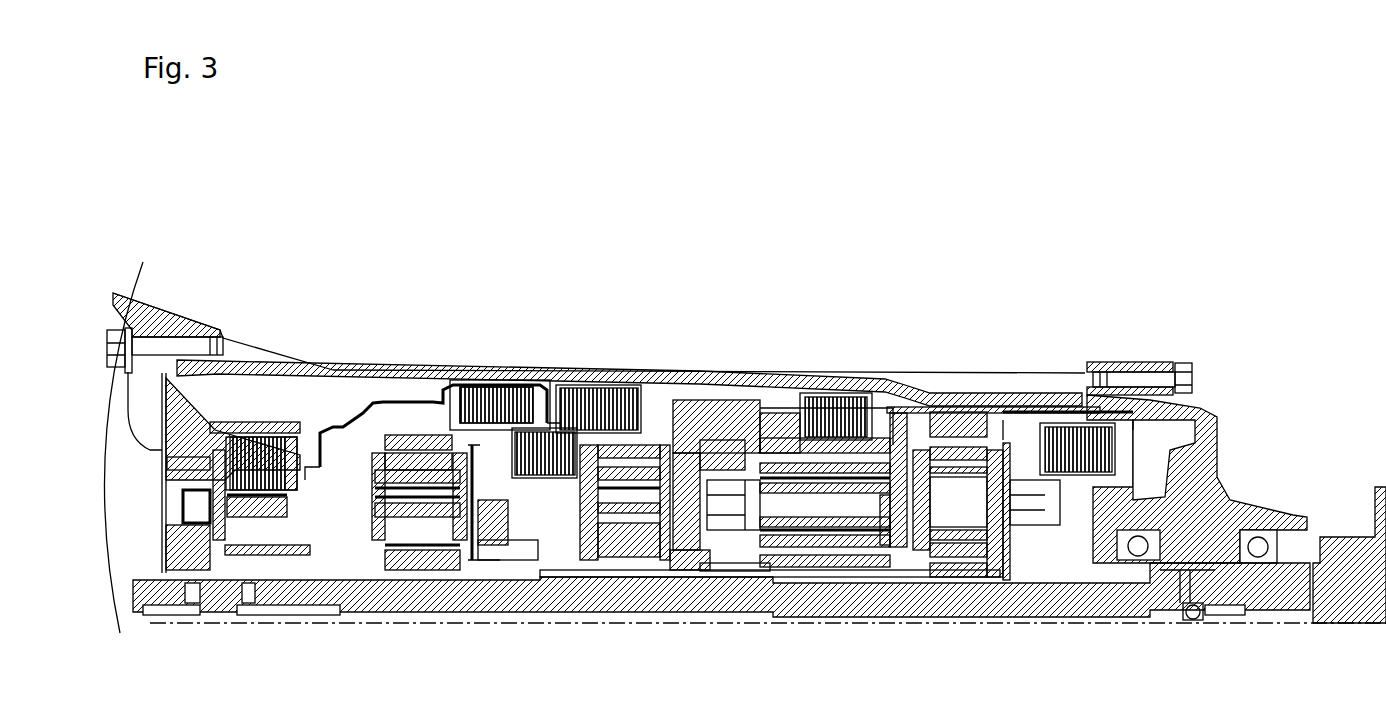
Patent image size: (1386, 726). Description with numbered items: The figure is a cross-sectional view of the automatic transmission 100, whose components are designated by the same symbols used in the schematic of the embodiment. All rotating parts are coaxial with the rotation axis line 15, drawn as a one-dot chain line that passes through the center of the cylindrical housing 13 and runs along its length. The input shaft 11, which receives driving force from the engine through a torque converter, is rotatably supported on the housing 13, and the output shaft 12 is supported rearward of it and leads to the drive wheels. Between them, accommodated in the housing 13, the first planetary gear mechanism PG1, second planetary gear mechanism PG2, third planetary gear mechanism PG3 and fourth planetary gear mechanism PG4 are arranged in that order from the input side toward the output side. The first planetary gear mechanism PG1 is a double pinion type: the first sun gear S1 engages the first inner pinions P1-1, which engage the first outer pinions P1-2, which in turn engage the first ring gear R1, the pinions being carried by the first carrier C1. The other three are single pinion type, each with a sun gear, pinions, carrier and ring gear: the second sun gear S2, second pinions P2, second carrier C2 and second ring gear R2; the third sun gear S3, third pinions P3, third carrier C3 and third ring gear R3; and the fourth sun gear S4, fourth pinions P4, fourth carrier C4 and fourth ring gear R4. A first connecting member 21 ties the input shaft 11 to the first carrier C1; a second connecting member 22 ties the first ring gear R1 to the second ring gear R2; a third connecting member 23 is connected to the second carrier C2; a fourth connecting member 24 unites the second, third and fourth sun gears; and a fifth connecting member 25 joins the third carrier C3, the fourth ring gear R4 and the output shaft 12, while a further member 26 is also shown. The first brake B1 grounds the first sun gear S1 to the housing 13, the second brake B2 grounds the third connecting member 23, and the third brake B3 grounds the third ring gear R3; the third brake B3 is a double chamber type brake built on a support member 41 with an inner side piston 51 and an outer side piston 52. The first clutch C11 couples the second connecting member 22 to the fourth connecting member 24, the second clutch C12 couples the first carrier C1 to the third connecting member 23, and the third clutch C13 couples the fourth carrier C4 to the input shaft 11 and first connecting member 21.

The automatic transmission 100 is at (670, 290).
The input shaft 11 is at (811, 605).
The output shaft 12 is at (1340, 623).
The housing 13 is at (448, 380).
The rotation axis line 15 is at (688, 625).
The first connecting member 21 is at (500, 560).
The second connecting member 22 is at (447, 402).
The third connecting member 23 is at (675, 400).
The fourth connecting member 24 is at (745, 585).
The fifth connecting member 25 is at (1022, 412).
The hub 26 is at (998, 407).
The support member 41 is at (692, 440).
The inner side piston 51 is at (718, 460).
The outer side piston 52 is at (775, 415).
The first brake B1 is at (257, 437).
The second brake B2 is at (600, 388).
The third brake B3 is at (812, 377).
The first carrier C1 is at (470, 545).
The second carrier C2 is at (707, 480).
The third carrier C3 is at (895, 500).
The fourth carrier C4 is at (1022, 585).
The first clutch C11 is at (548, 432).
The second clutch C12 is at (498, 387).
The third clutch C13 is at (1047, 427).
The first planetary gear mechanism PG1 is at (392, 487).
The second planetary gear mechanism PG2 is at (615, 517).
The third planetary gear mechanism PG3 is at (830, 504).
The fourth planetary gear mechanism PG4 is at (952, 506).
The first ring gear R1 is at (413, 435).
The second ring gear R2 is at (655, 445).
The third ring gear R3 is at (876, 438).
The fourth ring gear R4 is at (953, 412).
The first sun gear S1 is at (400, 570).
The second sun gear S2 is at (608, 557).
The third sun gear S3 is at (830, 570).
The fourth sun gear S4 is at (950, 577).
The first inner pinions P1-1 is at (425, 520).
The first outer pinions P1-2 is at (375, 470).
The second pinions P2 is at (645, 515).
The third pinions P3 is at (856, 547).
The fourth pinions P4 is at (968, 557).